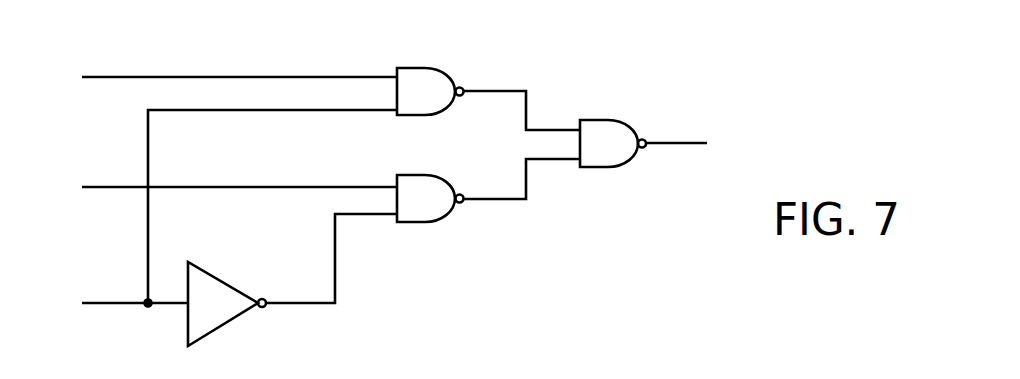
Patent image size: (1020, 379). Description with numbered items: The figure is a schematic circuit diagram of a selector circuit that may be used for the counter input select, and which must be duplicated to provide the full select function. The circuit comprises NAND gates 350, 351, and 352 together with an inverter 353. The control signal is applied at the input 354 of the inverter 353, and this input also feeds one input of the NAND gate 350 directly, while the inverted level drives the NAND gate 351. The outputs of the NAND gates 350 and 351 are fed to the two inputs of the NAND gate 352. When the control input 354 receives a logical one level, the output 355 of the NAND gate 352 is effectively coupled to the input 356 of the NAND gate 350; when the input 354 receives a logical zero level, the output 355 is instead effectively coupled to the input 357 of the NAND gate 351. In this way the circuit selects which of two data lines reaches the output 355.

The NAND gate 350 is at (424, 76).
The NAND gate 351 is at (424, 185).
The NAND gate 352 is at (600, 130).
The inverter 353 is at (229, 312).
The input 354 is at (187, 305).
The output 355 is at (648, 136).
The input 356 is at (397, 74).
The input 357 is at (397, 183).